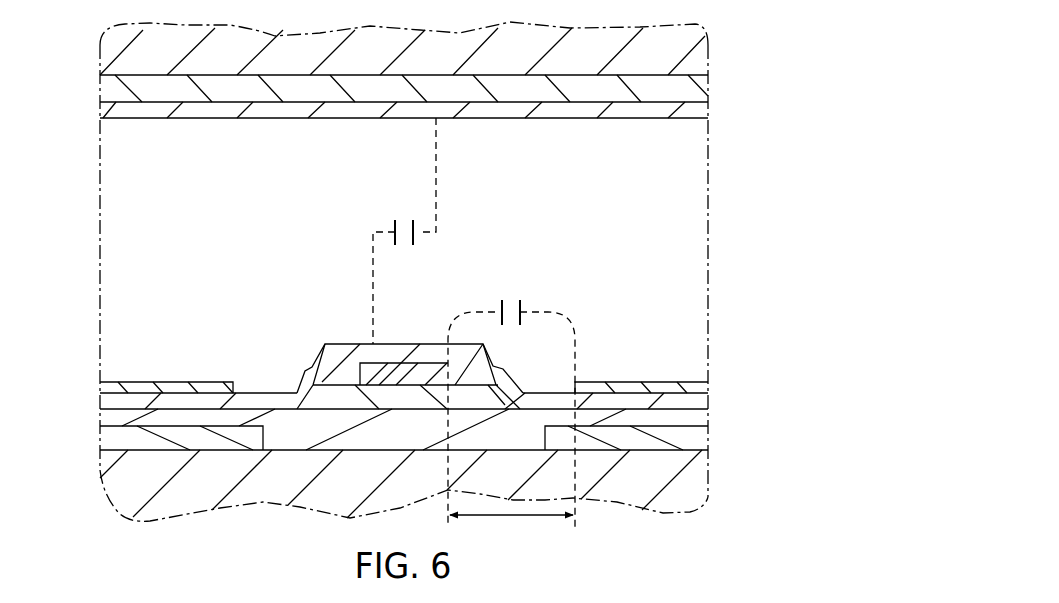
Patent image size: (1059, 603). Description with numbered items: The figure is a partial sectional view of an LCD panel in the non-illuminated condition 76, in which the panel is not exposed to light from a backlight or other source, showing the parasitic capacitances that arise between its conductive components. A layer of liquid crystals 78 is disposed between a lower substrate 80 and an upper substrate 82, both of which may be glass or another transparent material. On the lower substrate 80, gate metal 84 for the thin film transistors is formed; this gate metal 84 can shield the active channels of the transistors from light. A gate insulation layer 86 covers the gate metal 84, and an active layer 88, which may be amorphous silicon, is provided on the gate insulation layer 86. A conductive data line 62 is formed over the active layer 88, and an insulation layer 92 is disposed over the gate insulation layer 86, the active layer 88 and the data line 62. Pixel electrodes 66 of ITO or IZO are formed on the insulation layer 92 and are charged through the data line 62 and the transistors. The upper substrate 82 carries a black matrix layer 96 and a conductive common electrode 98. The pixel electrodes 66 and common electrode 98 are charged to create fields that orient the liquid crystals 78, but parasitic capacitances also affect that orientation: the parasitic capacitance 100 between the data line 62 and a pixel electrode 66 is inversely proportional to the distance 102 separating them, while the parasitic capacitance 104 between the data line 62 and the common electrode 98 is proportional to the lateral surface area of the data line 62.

The data line 62 is at (360, 378).
The pixel electrodes 66 is at (222, 383).
The non-illuminated LCD panel condition 76 is at (62, 126).
The layer of liquid crystals 78 is at (693, 276).
The substrate 80 is at (699, 474).
The substrate 82 is at (694, 63).
The gate metal 84 is at (104, 439).
The gate insulation layer 86 is at (699, 418).
The active layer 88 is at (494, 402).
The insulation layer 92 is at (312, 368).
The black matrix layer 96 is at (699, 87).
The common electrode 98 is at (699, 112).
The parasitic capacitance 100 is at (491, 309).
The distance 102 is at (512, 516).
The parasitic capacitance 104 is at (387, 221).